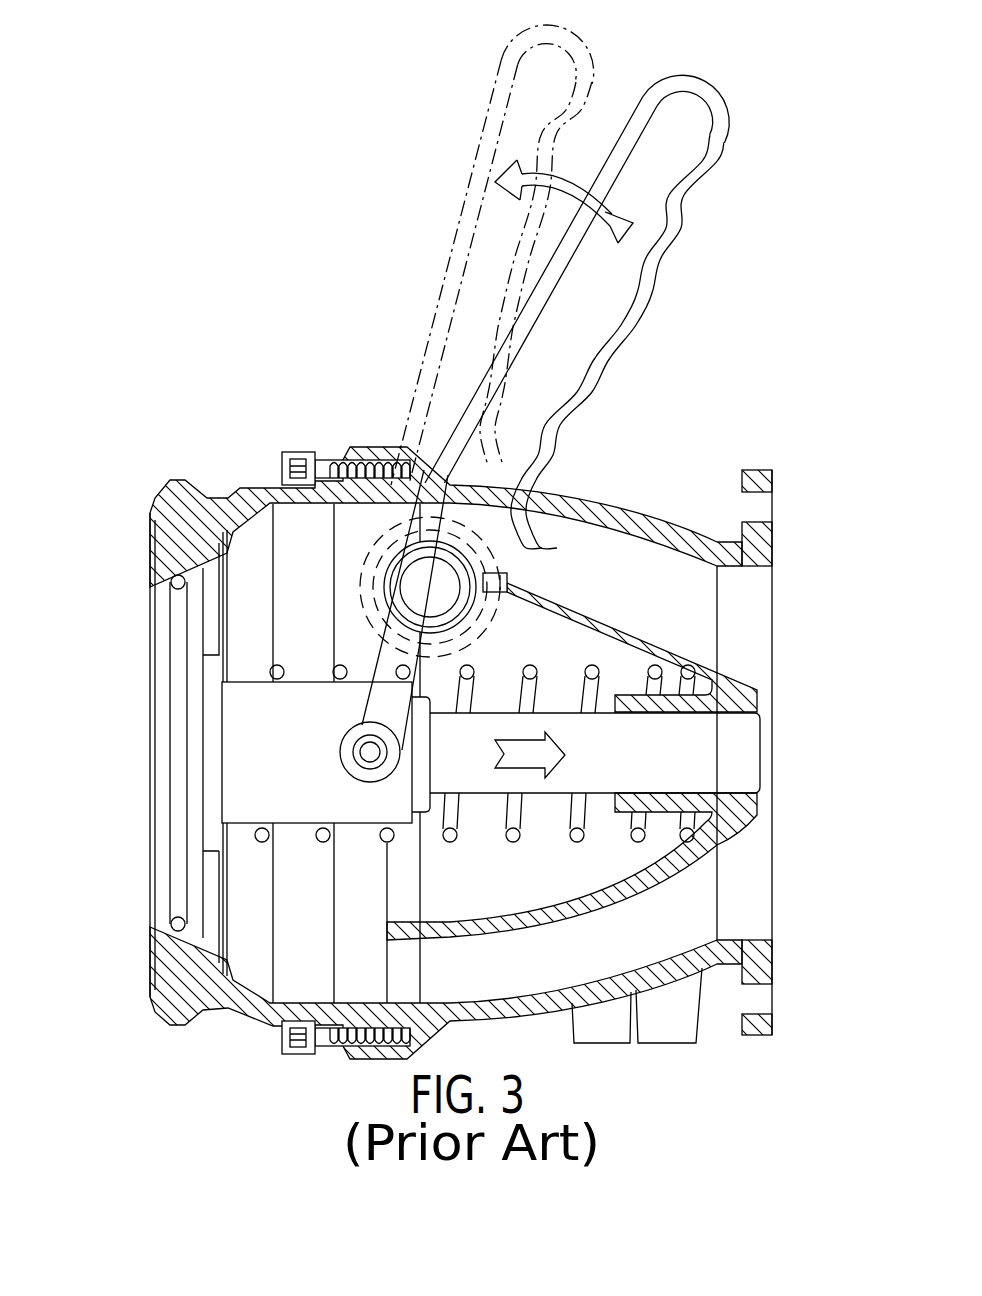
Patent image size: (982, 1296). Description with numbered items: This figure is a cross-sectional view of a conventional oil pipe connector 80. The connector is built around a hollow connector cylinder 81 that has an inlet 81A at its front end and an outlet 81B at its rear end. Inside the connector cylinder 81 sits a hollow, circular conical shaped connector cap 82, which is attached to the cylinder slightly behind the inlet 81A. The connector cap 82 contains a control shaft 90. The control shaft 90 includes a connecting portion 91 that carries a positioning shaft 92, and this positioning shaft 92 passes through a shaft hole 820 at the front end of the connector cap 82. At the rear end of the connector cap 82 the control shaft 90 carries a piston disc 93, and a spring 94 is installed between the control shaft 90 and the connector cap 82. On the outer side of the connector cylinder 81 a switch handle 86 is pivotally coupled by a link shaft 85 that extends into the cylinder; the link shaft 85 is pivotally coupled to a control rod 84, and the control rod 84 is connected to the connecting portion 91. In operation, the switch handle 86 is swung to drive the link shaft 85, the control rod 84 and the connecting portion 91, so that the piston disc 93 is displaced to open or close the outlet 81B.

The oil pipe connector 80 is at (630, 472).
The connector cylinder 81 is at (650, 517).
The inlet 81A is at (780, 587).
The outlet 81B is at (130, 552).
The connector cap 82 is at (653, 630).
The shaft hole 820 is at (733, 733).
The control rod 84 is at (388, 672).
The link shaft 85 is at (430, 585).
The switch handle 86 is at (648, 300).
The control shaft 90 is at (297, 842).
The connecting portion 91 is at (248, 720).
The positioning shaft 92 is at (733, 766).
The piston disc 93 is at (178, 752).
The spring 94 is at (514, 842).